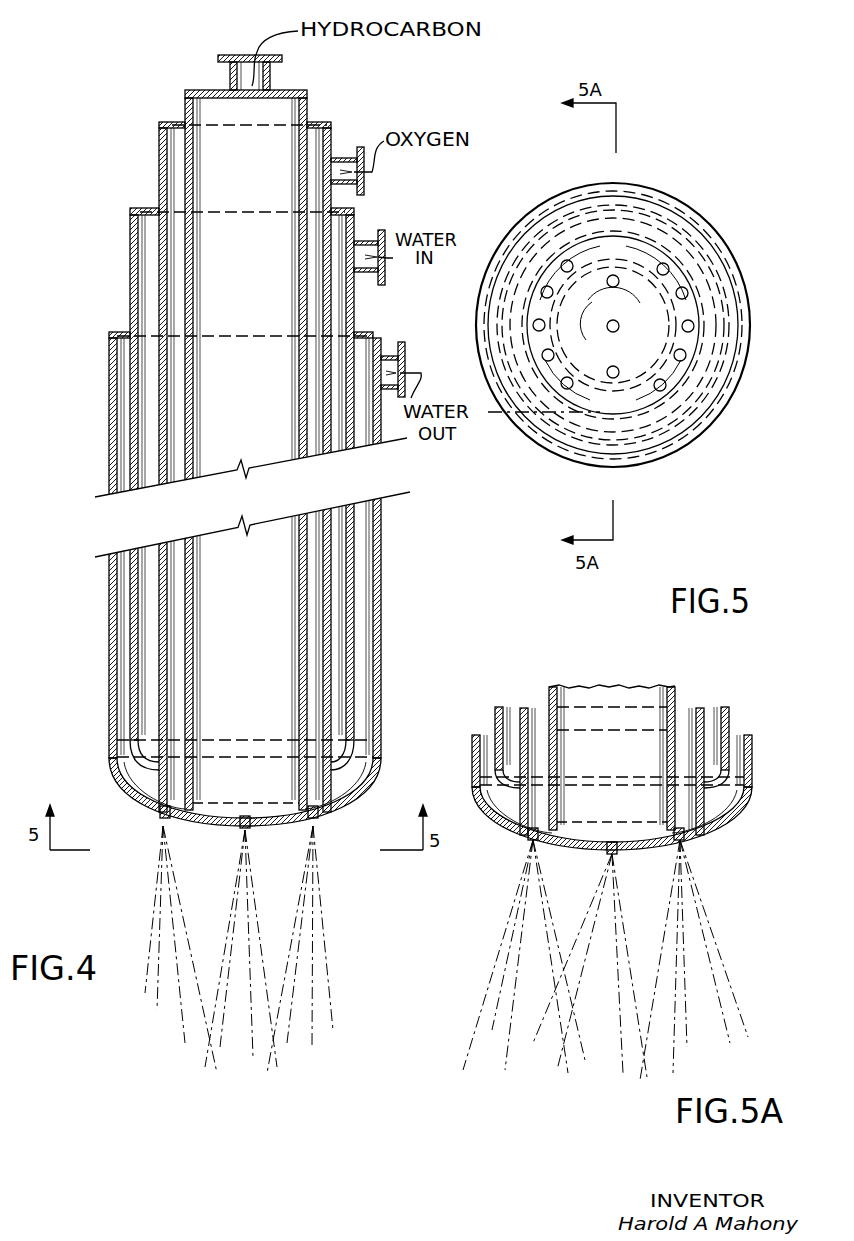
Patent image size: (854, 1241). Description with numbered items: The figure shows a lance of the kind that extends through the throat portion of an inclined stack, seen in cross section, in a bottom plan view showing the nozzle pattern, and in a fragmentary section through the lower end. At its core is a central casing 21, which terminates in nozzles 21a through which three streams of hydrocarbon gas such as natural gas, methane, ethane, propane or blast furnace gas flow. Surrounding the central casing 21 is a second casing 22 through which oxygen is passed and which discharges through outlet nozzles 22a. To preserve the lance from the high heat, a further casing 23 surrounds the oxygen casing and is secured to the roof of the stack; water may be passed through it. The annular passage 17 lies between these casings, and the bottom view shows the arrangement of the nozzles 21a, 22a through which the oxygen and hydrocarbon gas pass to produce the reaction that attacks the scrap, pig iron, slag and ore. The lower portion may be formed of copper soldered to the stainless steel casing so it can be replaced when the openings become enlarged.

In FIG. 4, the intermediate tube 17 is at (331, 686).
In FIG. 5, the intermediate tube 17 is at (703, 327).
In FIG. 5A, the intermediate tube 17 is at (700, 720).
In FIG. 4, the central casing 21 is at (309, 97).
In FIG. 5, the central casing 21 is at (665, 290).
In FIG. 5A, the central casing 21 is at (677, 690).
In FIG. 4, the second casing 22 is at (333, 207).
In FIG. 5A, the second casing 22 is at (612, 771).
In FIG. 4, the casing 23 is at (382, 549).
In FIG. 5, the casing 23 is at (703, 217).
In FIG. 5A, the casing 23 is at (750, 758).
In FIG. 4, the nozzles 21a is at (247, 829).
In FIG. 5, the nozzles 21a is at (616, 380).
In FIG. 5A, the nozzles 21a is at (613, 840).
In FIG. 4, the outlet nozzles 22a is at (316, 818).
In FIG. 5, the outlet nozzles 22a is at (666, 388).
In FIG. 5A, the outlet nozzles 22a is at (684, 839).